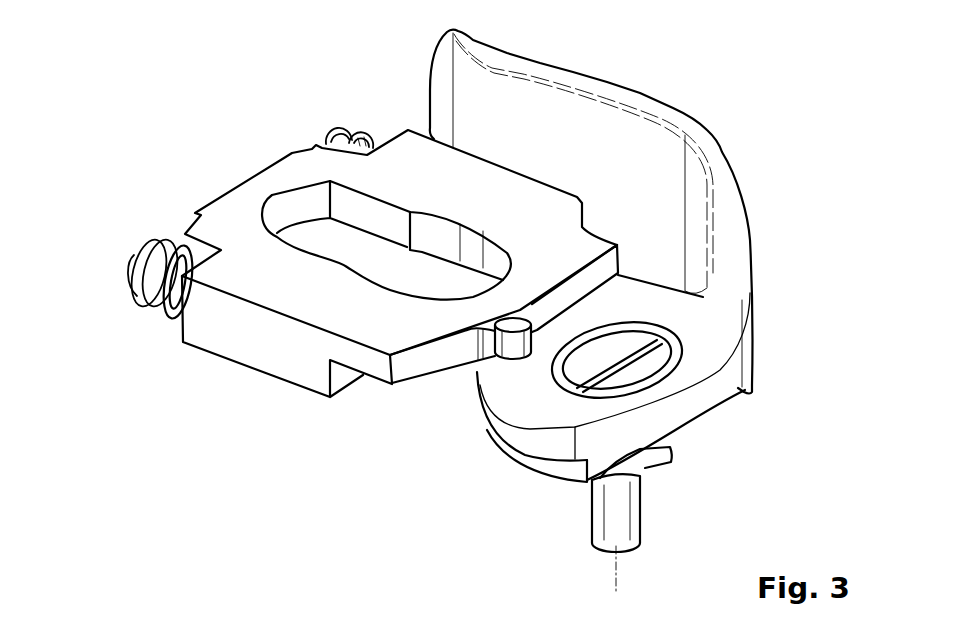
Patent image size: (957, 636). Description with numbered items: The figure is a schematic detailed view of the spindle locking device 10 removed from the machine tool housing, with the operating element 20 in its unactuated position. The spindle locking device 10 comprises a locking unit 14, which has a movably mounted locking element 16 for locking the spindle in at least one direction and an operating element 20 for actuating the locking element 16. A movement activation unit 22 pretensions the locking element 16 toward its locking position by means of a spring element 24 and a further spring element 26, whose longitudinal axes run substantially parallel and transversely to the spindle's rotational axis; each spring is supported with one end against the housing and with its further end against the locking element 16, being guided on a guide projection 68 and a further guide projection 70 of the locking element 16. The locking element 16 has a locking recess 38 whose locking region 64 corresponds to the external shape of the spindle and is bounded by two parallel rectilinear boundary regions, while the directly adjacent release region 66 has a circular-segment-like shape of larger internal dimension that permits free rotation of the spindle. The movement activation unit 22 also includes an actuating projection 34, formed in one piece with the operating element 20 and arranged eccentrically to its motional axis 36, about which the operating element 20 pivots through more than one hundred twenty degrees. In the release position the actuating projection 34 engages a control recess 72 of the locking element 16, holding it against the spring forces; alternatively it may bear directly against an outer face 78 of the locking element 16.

The spindle locking device 10 is at (178, 74).
The locking unit 14 is at (140, 172).
The locking element 16 is at (257, 278).
The operating element 20 is at (648, 132).
The movement activation unit 22 is at (774, 413).
The spring element 24 is at (133, 287).
The further spring element 26 is at (330, 136).
The actuating projection 34 is at (507, 349).
The motional axis 36 is at (613, 579).
The locking recess 38 is at (387, 216).
The locking region 64 is at (284, 185).
The release region 66 is at (428, 298).
The guide projection 68 is at (166, 318).
The further guide projection 70 is at (362, 135).
The control recess 72 is at (470, 326).
The outer face 78 is at (588, 291).